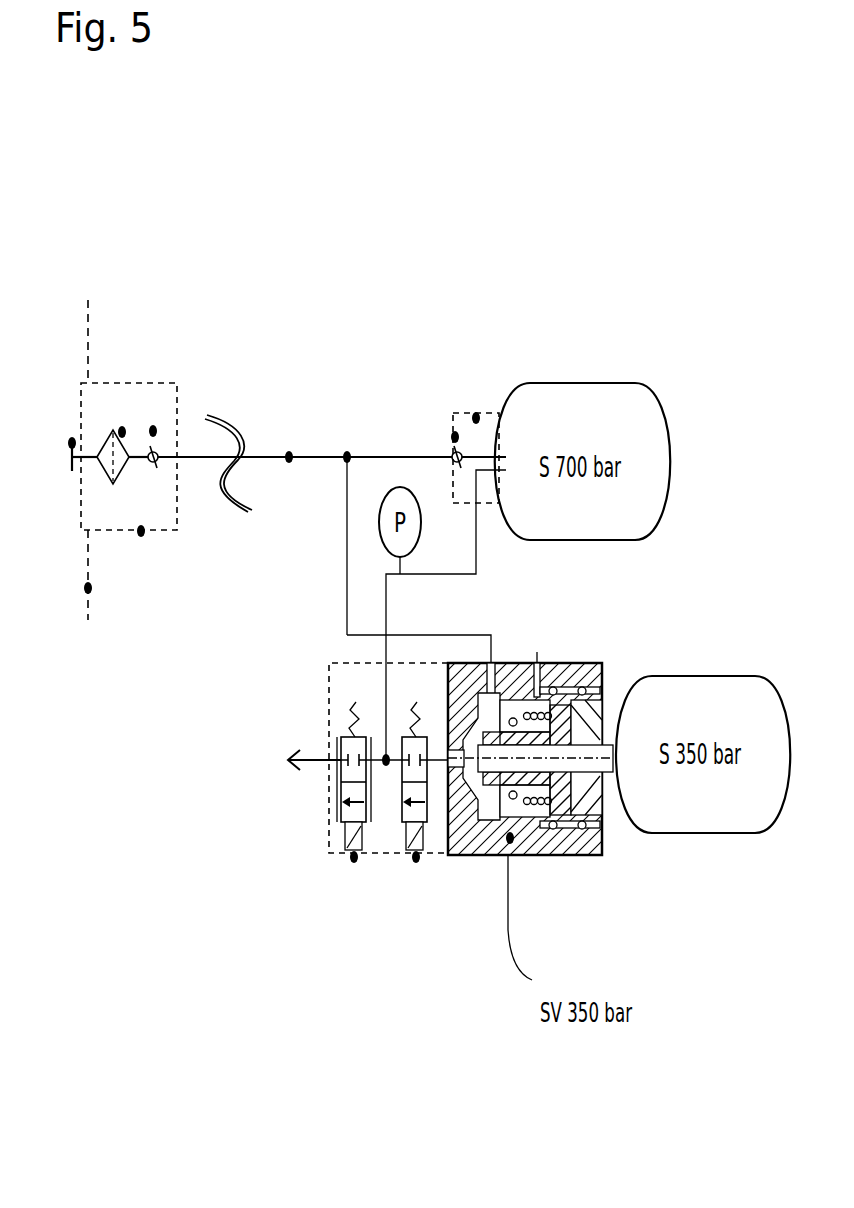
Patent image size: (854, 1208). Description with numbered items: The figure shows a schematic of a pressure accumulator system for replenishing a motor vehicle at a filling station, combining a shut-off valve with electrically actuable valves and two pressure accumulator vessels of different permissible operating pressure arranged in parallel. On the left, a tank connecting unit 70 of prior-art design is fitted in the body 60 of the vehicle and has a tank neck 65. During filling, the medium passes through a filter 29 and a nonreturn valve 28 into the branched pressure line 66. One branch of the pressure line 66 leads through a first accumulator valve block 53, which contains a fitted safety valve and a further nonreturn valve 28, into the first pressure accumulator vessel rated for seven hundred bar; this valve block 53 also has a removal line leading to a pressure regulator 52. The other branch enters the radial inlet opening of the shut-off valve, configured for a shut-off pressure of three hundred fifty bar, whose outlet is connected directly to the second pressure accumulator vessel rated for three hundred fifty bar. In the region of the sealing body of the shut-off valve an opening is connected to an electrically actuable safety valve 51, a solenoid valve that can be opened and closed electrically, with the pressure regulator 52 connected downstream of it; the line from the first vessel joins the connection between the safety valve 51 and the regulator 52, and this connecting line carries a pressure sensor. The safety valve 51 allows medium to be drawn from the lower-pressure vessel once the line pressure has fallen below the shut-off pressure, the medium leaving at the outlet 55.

The tank neck 65 is at (72, 443).
The filter 29 is at (122, 432).
The nonreturn valve 28 is at (153, 431).
The tank connecting unit 70 is at (141, 535).
The body 60 is at (90, 590).
The pressure line 66 is at (289, 462).
The first accumulator valve block 53 is at (476, 417).
The outlet 55 is at (295, 765).
The pressure regulator 52 is at (354, 862).
The electrically actuable safety valve 51 is at (416, 862).